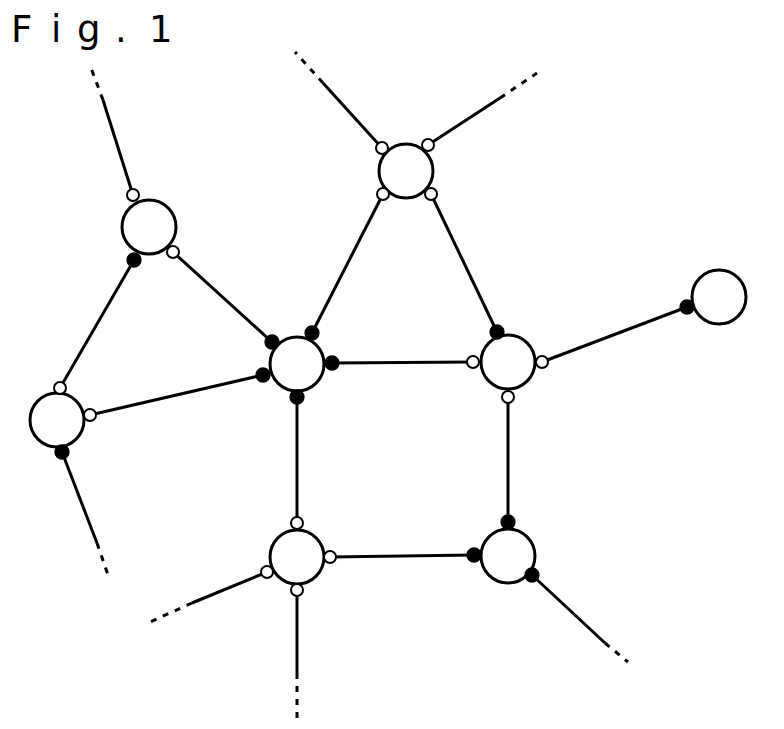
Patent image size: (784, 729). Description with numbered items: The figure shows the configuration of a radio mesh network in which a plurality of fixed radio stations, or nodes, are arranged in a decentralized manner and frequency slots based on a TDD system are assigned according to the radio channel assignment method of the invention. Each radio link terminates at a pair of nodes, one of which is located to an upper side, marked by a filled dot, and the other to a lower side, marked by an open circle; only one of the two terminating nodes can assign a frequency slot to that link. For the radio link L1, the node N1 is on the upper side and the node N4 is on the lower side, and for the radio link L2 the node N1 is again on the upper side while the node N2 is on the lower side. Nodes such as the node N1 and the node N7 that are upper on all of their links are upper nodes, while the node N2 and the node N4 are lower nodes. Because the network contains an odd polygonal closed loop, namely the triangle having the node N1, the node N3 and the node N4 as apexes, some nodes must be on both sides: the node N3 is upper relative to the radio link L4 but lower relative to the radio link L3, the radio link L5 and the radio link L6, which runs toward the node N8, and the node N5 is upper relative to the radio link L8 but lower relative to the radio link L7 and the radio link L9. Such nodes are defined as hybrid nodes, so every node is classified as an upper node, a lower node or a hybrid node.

The node N1 is at (297, 364).
The node N2 is at (297, 557).
The node N3 is at (508, 362).
The node N4 is at (406, 171).
The node N5 is at (149, 227).
The node N7 is at (508, 556).
The node N8 is at (719, 297).
The radio link L1 is at (357, 243).
The radio link L2 is at (298, 456).
The radio link L3 is at (378, 362).
The radio link L4 is at (465, 261).
The radio link L5 is at (509, 455).
The radio link L6 is at (575, 348).
The radio link L7 is at (123, 147).
The radio link L8 is at (98, 323).
The radio link L9 is at (230, 297).